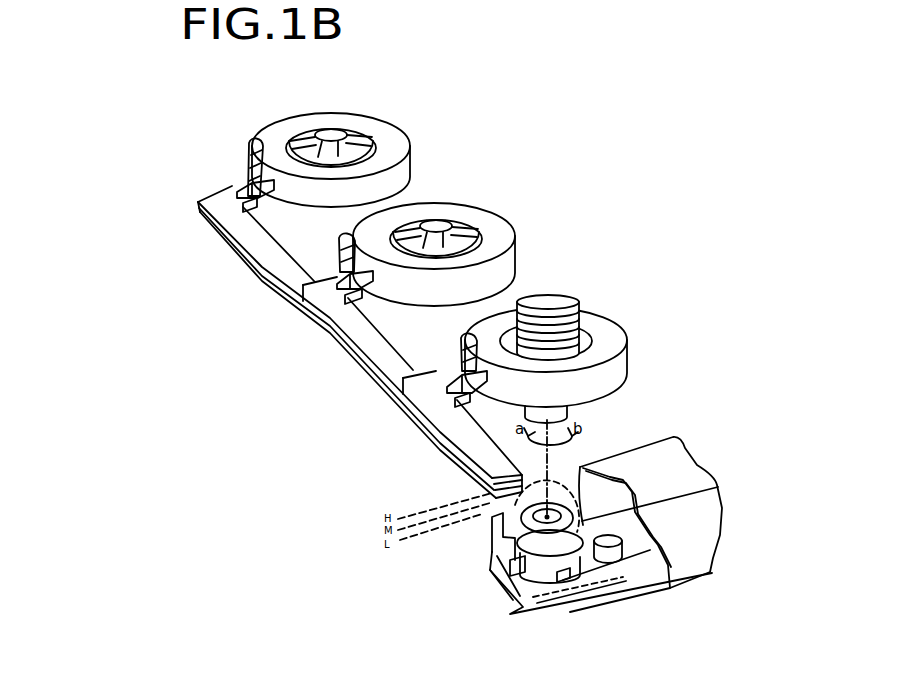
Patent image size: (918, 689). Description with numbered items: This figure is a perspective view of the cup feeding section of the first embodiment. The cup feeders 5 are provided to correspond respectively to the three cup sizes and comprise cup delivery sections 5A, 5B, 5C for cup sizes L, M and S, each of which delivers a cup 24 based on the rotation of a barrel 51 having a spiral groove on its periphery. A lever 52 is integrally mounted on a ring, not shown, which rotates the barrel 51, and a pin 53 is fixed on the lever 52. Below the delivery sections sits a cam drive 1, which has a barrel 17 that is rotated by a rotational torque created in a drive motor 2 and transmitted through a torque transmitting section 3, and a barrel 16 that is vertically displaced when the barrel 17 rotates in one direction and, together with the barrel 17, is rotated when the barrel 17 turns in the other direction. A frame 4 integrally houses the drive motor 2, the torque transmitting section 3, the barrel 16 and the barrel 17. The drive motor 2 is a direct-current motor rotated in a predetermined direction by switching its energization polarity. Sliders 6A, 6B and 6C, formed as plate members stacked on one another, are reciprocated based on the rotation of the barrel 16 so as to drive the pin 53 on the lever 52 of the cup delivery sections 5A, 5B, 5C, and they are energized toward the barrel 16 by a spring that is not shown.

The cam drive 1 is at (515, 588).
The drive motor 2 is at (611, 555).
The torque transmitting section 3 is at (512, 608).
The frame 4 is at (695, 565).
The cup feeders 5 is at (500, 172).
The cup delivery section 5A is at (398, 128).
The cup delivery section 5B is at (500, 227).
The cup delivery section 5C is at (610, 330).
The slider 6A is at (252, 237).
The slider 6B is at (365, 341).
The slider 6C is at (470, 443).
The barrel 16 is at (580, 600).
The barrel 17 is at (545, 572).
The cup 24 is at (563, 303).
The barrel 51 is at (333, 132).
The lever 52 is at (252, 145).
The pin 53 is at (237, 186).